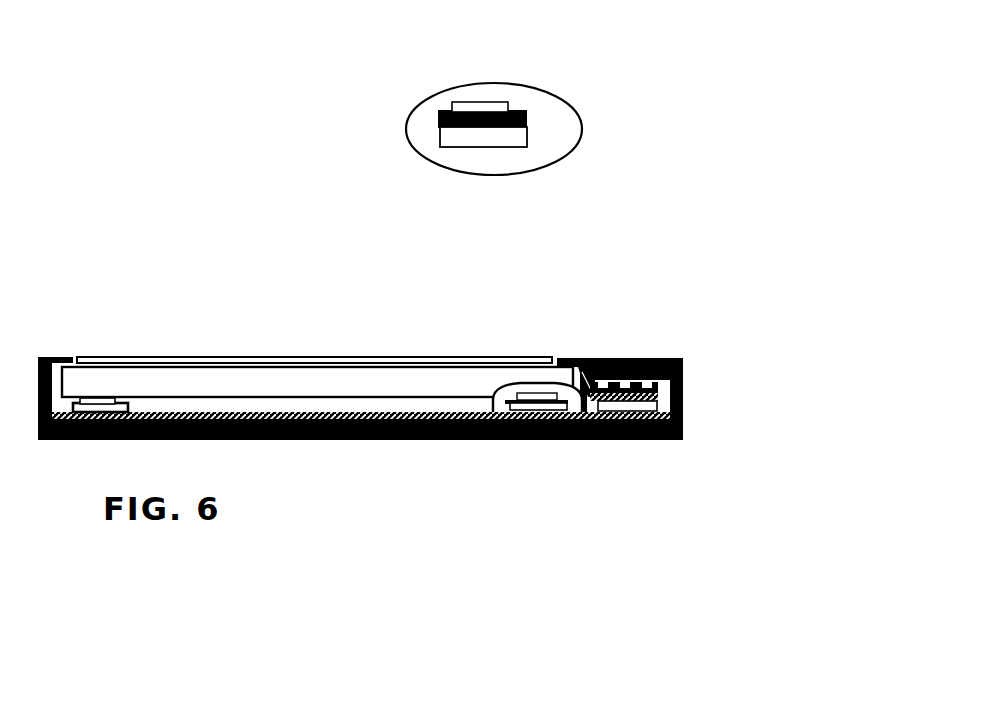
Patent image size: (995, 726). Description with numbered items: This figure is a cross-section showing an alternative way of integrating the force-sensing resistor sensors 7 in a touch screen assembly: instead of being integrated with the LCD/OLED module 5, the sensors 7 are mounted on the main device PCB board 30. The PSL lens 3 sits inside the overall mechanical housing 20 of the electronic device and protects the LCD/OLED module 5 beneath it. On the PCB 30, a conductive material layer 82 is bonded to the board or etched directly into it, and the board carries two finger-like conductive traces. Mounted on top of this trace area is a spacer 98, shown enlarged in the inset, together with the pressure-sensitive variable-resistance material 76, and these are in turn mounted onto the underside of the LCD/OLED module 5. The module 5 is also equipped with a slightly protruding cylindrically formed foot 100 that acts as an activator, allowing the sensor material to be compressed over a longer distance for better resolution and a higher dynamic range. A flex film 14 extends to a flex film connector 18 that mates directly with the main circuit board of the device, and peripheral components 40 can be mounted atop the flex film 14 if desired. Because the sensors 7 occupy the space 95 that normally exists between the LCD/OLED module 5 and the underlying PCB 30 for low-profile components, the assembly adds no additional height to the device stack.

The PSL lens 3 is at (197, 355).
The LCD/OLED module 5 is at (438, 372).
The FSR sensor 7 is at (532, 385).
The flex film 14 is at (586, 392).
The flex film connector 18 is at (645, 414).
The mechanical housing 20 is at (47, 355).
The main device PCB board 30 is at (502, 414).
The peripheral components 40 is at (655, 390).
The pressure-sensitive variable-resistance material 76 is at (528, 117).
The conductive material layer 82 is at (540, 410).
The space 95 is at (337, 402).
The spacer 98 is at (528, 137).
The foot 100 is at (483, 103).